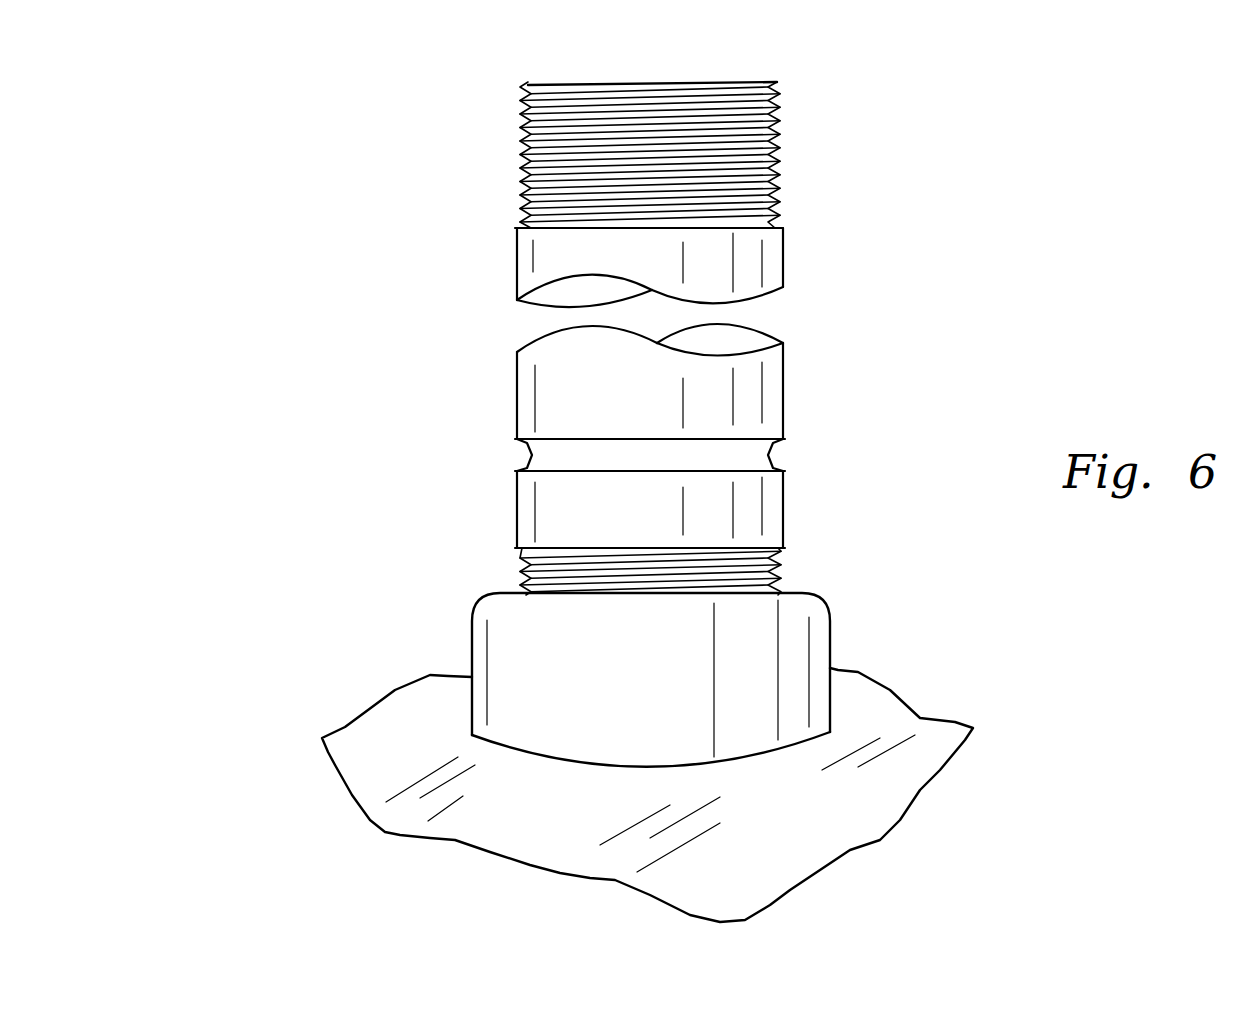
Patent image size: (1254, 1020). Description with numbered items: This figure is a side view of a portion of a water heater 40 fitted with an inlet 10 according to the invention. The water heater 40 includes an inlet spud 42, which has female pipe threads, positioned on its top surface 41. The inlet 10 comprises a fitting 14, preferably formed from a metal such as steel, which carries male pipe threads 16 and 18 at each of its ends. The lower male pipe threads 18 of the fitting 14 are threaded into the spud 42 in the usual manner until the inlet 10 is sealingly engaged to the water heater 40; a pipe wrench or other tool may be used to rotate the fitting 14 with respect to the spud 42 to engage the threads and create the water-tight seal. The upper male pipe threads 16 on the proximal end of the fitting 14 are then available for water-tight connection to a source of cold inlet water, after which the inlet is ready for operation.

The inlet 10 is at (862, 386).
The fitting 14 is at (503, 375).
The male pipe threads 16 is at (798, 192).
The male pipe threads 18 is at (800, 572).
The water heater 40 is at (659, 687).
The top surface 41 is at (870, 800).
The inlet spud 42 is at (462, 646).